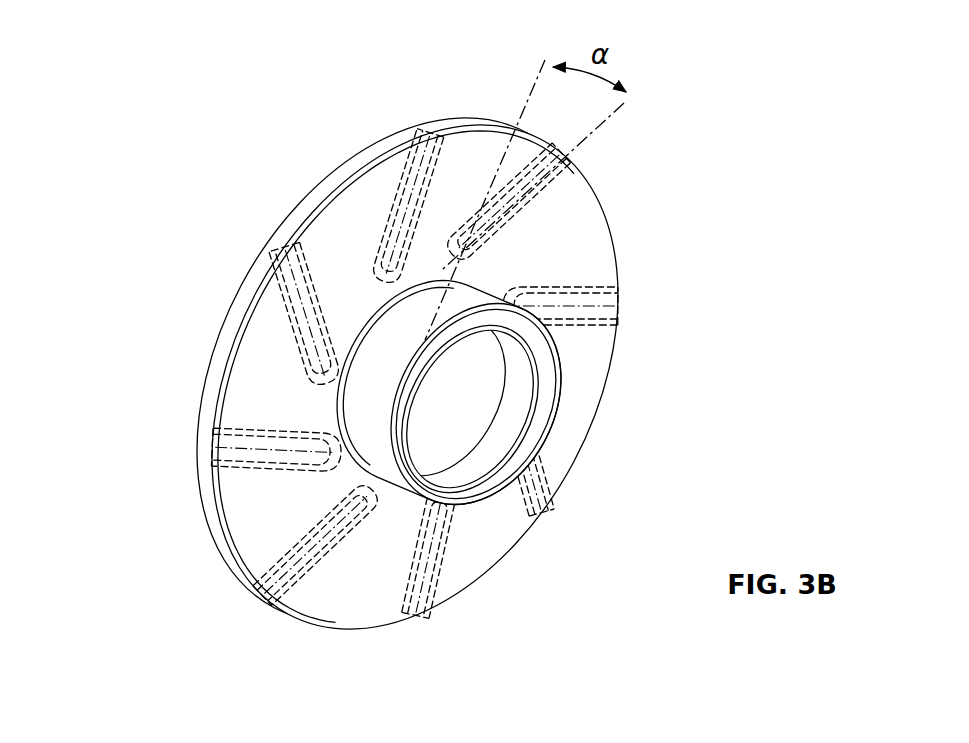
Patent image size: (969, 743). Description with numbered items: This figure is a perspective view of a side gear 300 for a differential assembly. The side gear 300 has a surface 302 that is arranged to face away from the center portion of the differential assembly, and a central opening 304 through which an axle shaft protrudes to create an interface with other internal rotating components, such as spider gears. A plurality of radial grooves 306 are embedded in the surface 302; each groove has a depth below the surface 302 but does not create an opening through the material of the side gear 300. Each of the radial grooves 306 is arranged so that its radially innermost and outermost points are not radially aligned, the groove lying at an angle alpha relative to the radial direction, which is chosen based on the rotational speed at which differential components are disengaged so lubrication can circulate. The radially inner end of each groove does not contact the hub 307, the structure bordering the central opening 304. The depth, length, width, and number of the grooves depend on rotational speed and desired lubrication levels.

The side gear 300 is at (389, 372).
The surface 302 is at (345, 243).
The central opening 304 is at (463, 392).
The radial grooves 306 is at (522, 187).
The hub 307 is at (505, 318).